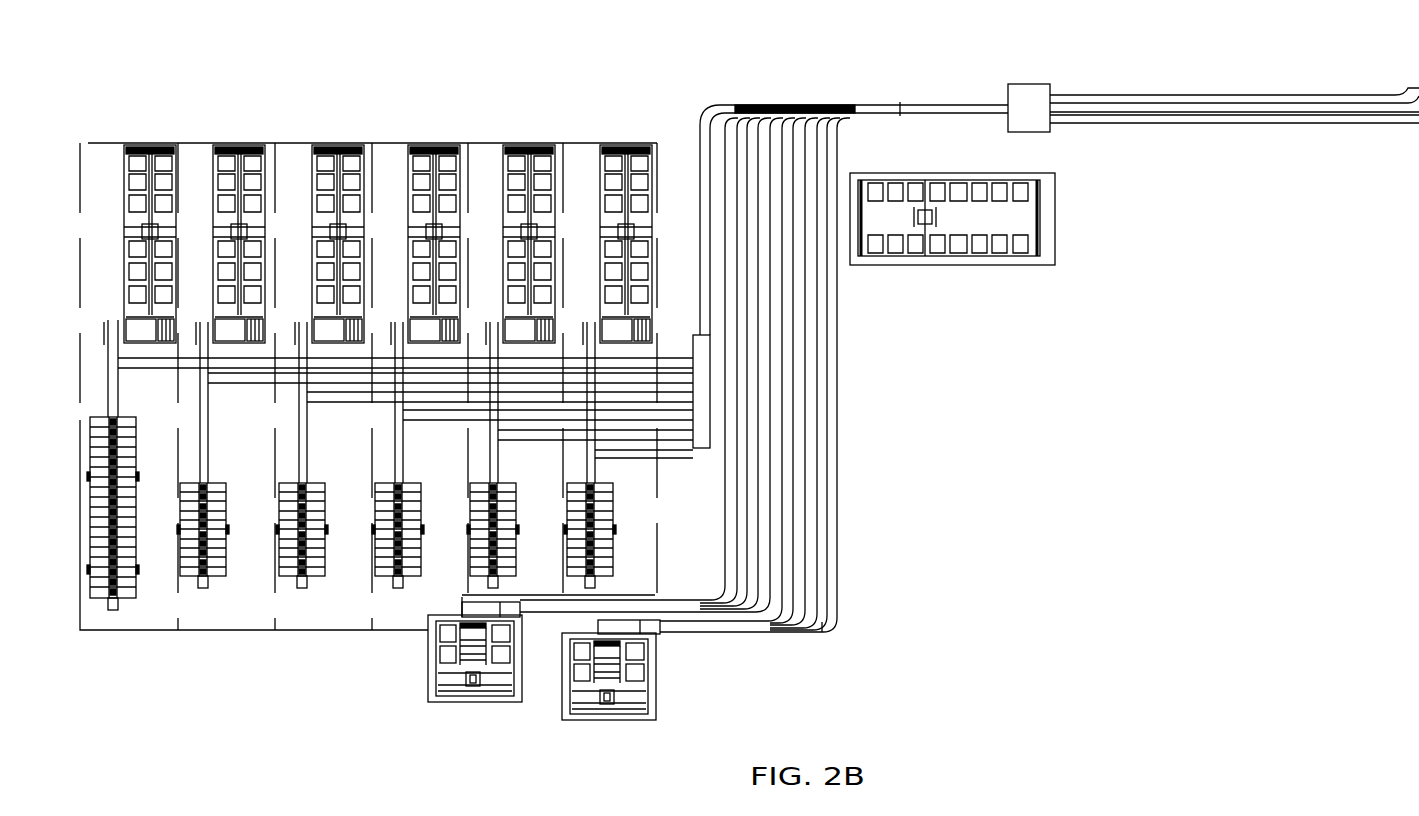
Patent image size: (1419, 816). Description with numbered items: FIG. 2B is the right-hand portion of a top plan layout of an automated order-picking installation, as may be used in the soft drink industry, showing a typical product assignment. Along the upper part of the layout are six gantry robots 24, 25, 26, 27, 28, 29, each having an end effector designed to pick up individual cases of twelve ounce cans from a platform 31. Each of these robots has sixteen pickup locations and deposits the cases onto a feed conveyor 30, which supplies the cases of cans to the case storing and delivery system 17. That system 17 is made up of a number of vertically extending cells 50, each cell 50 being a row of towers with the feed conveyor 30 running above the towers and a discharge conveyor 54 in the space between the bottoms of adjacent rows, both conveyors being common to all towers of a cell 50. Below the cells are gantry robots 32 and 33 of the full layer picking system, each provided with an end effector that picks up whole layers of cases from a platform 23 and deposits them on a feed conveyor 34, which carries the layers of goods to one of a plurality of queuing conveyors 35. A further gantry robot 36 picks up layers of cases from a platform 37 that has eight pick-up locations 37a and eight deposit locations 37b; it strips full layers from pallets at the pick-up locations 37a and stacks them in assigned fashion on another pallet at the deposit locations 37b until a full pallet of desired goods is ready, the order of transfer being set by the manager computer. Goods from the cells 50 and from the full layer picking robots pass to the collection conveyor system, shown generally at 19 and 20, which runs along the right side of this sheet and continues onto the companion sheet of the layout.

The case storing and delivery system 17 is at (108, 625).
The collection conveyor system 19 is at (772, 93).
The collection conveyor system 20 is at (836, 528).
The platform 23 is at (430, 663).
The gantry robot 24 is at (113, 147).
The gantry robot 25 is at (293, 148).
The gantry robot 26 is at (350, 148).
The gantry robot 27 is at (483, 150).
The gantry robot 28 is at (540, 148).
The gantry robot 29 is at (662, 210).
The feed conveyor 30 is at (112, 322).
The platform 31 is at (232, 145).
The gantry robot 32 is at (475, 690).
The gantry robot 33 is at (612, 700).
The feed conveyor 34 is at (552, 608).
The queuing conveyor 35 is at (1223, 120).
The gantry robot 36 is at (930, 222).
The platform 37 is at (1018, 220).
The pick-up location 37a is at (1043, 240).
The deposit location 37b is at (1002, 185).
The cell 50 is at (226, 480).
The discharge conveyor 54 is at (118, 360).